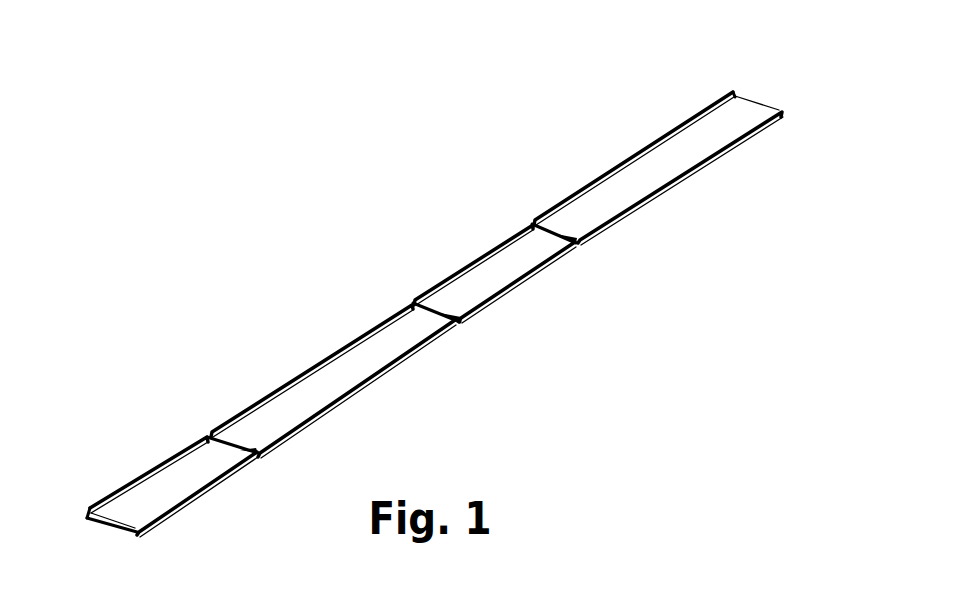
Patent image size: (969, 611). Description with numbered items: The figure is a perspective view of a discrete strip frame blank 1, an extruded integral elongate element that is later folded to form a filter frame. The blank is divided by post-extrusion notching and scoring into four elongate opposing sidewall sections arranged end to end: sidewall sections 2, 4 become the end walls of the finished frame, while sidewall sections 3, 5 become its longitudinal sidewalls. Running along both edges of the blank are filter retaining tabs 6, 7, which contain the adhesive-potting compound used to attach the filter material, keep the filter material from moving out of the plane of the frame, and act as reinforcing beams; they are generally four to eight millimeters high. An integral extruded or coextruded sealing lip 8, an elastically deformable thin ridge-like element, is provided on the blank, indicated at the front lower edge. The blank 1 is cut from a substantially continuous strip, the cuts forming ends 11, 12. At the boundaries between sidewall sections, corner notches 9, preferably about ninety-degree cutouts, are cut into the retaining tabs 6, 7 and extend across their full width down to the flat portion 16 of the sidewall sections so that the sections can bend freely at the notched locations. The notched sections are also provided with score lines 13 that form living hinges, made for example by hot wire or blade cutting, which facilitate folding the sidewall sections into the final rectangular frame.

The strip frame blank 1 is at (743, 101).
The sidewall section 2 is at (141, 481).
The sidewall section 3 is at (300, 396).
The sidewall section 4 is at (486, 262).
The sidewall section 5 is at (613, 178).
The filter retaining tab 6 is at (667, 142).
The filter retaining tab 7 is at (672, 186).
The sealing lip 8 is at (122, 535).
The corner notch 9 is at (260, 455).
The end 11 is at (767, 104).
The end 12 is at (97, 524).
The score line 13 is at (437, 305).
The flat portion 16 is at (347, 370).